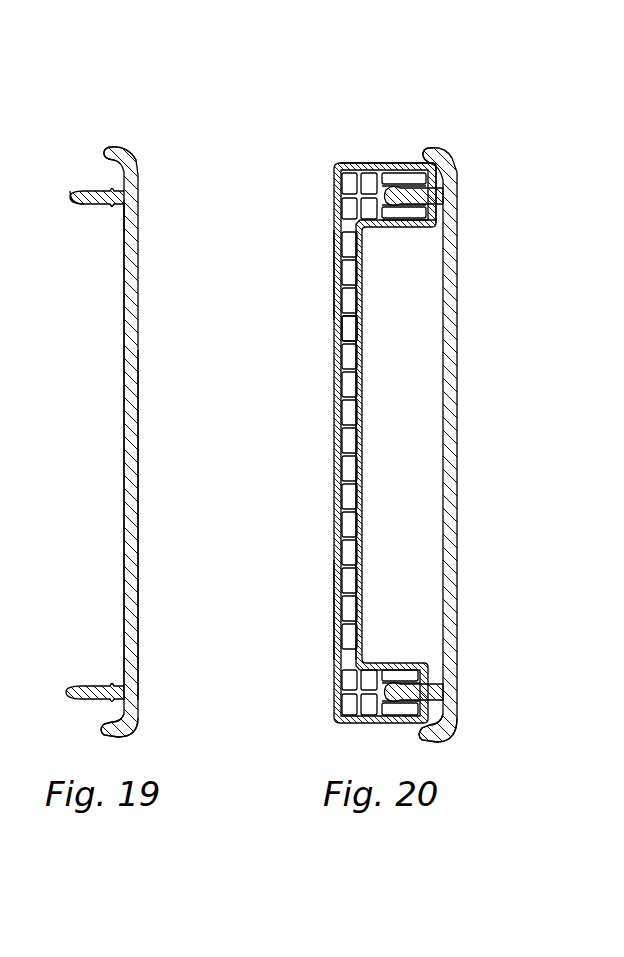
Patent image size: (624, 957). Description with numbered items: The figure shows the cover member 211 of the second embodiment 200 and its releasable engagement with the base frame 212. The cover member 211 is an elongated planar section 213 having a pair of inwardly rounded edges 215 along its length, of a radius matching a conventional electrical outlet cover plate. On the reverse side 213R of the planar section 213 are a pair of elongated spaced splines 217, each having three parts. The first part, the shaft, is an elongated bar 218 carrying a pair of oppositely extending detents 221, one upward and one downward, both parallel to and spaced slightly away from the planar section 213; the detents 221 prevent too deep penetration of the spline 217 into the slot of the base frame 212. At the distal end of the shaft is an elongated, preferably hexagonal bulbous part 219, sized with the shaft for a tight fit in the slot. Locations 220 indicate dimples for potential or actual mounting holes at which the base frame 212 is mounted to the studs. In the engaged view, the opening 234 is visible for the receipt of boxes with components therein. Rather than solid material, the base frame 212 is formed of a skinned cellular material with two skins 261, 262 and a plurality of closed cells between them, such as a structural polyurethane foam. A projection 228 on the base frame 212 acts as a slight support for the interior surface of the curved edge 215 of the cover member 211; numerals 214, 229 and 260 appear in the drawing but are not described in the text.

In FIG. 20, the second embodiment 200 is at (373, 108).
In FIG. 19, the cover member 211 is at (156, 302).
In FIG. 20, the cover member 211 is at (468, 296).
In FIG. 20, the base frame 212 is at (312, 460).
In FIG. 19, the planar section 213 is at (139, 604).
In FIG. 19, the reverse side 213R is at (124, 343).
In FIG. 20, the frame side wall 214 is at (338, 578).
In FIG. 19, the inwardly rounded edges 215 is at (126, 147).
In FIG. 20, the inwardly rounded edges 215 is at (460, 118).
In FIG. 19, the spline 217 is at (97, 189).
In FIG. 19, the elongated bar 218 is at (97, 207).
In FIG. 20, the elongated bar 218 is at (366, 526).
In FIG. 19, the bulbous part 219 is at (70, 199).
In FIG. 19, the dimples 220 is at (110, 684).
In FIG. 19, the detents 221 is at (118, 222).
In FIG. 20, the projection 228 is at (418, 160).
In FIG. 20, the prong receiving slot 229 is at (392, 242).
In FIG. 20, the opening 234 is at (402, 321).
In FIG. 20, the cell 260 is at (352, 326).
In FIG. 20, the skin 261 is at (358, 336).
In FIG. 20, the skin 262 is at (338, 285).